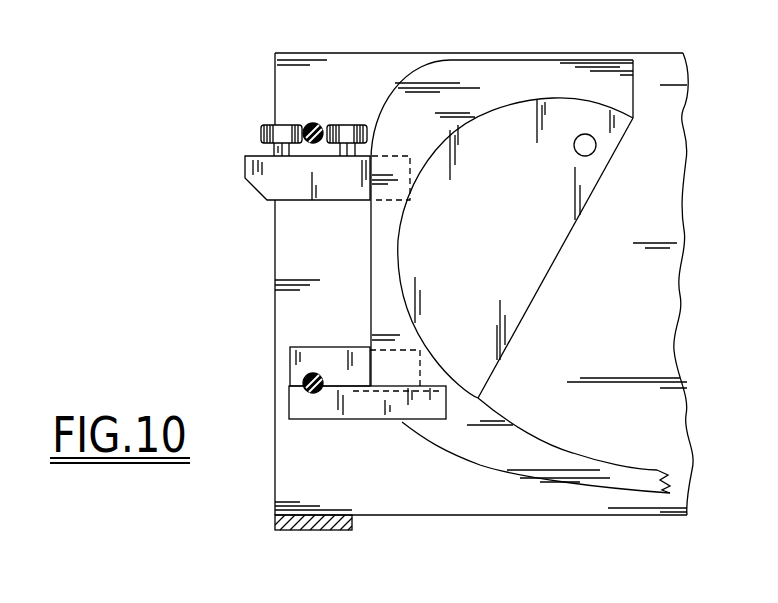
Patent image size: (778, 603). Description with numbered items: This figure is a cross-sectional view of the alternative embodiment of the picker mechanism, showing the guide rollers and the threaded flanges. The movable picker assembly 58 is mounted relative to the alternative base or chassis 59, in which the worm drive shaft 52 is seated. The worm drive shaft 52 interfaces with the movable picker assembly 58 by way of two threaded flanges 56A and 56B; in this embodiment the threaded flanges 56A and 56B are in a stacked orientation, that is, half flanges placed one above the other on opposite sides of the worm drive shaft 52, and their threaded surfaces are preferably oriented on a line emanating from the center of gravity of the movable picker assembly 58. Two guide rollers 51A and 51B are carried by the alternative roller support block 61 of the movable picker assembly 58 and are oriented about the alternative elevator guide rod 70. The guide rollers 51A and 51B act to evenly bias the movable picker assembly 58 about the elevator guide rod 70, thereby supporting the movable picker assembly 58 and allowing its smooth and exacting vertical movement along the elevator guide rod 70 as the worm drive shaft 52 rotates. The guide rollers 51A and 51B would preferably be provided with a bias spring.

The movable picker assembly 58 is at (512, 72).
The base or chassis 59 is at (656, 427).
The roller support block 61 is at (270, 182).
The guide roller 51A is at (268, 124).
The guide roller 51B is at (334, 124).
The elevator guide rod 70 is at (320, 123).
The threaded flange 56A is at (307, 408).
The threaded flange 56B is at (291, 356).
The worm drive shaft 52 is at (303, 383).